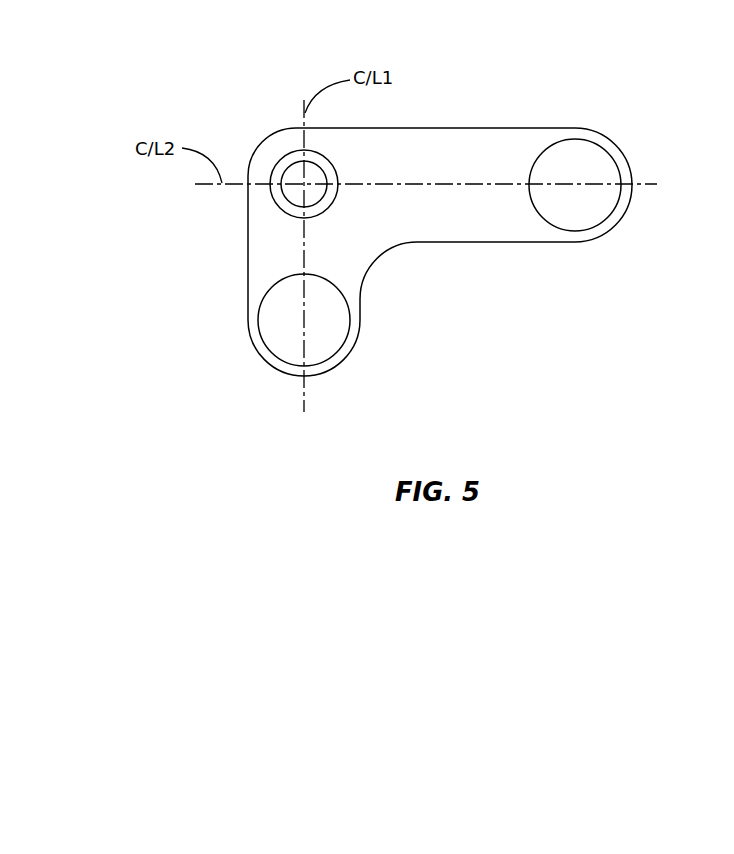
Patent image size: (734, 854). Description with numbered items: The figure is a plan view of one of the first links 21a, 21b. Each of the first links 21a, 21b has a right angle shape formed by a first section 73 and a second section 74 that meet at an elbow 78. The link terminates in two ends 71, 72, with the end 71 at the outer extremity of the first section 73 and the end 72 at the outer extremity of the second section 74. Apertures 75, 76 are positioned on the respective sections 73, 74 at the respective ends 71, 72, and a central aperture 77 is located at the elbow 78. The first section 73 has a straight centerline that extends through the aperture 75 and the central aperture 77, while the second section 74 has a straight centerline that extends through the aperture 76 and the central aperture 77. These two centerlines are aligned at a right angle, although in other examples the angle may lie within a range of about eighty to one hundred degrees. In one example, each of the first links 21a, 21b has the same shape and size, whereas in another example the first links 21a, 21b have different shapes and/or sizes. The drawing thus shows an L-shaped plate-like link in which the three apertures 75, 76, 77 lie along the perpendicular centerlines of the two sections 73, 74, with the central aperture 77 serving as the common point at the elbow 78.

The first link 21a is at (558, 82).
The first link 21b is at (441, 250).
The end 71 is at (287, 373).
The end 72 is at (633, 182).
The first section 73 is at (268, 238).
The second section 74 is at (460, 143).
The aperture 75 is at (258, 327).
The aperture 76 is at (573, 232).
The central aperture 77 is at (328, 180).
The elbow 78 is at (265, 142).